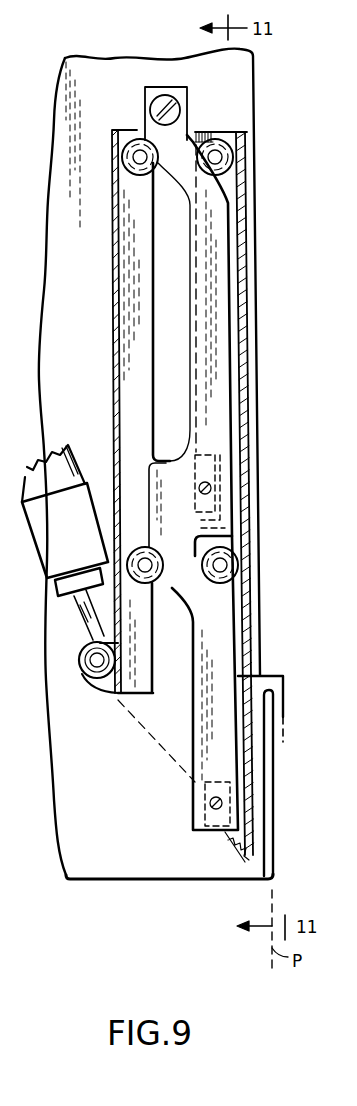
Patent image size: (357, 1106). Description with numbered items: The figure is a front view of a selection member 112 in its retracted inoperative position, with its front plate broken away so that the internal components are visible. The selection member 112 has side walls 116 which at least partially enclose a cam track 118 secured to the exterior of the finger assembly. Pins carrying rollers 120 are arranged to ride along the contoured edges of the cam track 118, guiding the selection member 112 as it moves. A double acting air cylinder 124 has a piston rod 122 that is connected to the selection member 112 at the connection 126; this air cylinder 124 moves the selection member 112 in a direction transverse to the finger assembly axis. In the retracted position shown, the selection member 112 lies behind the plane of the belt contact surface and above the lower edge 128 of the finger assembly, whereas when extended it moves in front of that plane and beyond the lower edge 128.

The selection member 112 is at (258, 378).
The side walls 116 is at (110, 350).
The cam track 118 is at (222, 320).
The rollers 120 is at (137, 140).
The piston rod 122 is at (90, 566).
The double acting air cylinder 124 is at (73, 447).
The connection 126 is at (97, 682).
The lower edge 128 is at (181, 882).